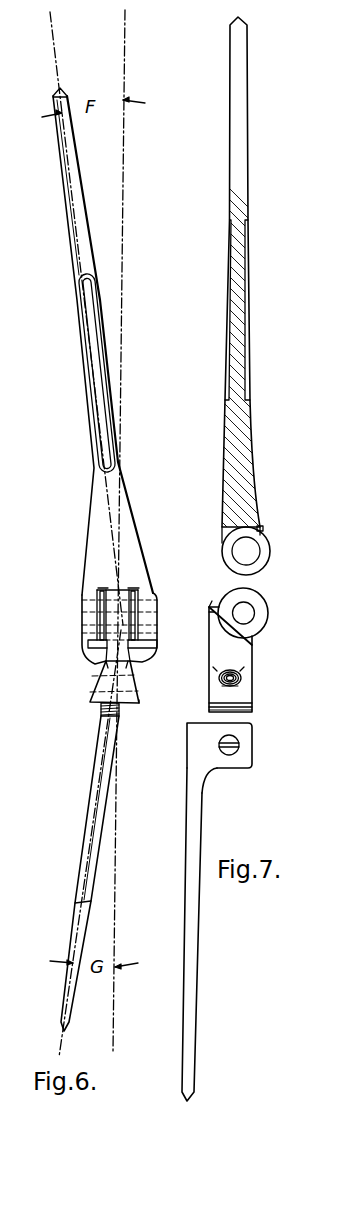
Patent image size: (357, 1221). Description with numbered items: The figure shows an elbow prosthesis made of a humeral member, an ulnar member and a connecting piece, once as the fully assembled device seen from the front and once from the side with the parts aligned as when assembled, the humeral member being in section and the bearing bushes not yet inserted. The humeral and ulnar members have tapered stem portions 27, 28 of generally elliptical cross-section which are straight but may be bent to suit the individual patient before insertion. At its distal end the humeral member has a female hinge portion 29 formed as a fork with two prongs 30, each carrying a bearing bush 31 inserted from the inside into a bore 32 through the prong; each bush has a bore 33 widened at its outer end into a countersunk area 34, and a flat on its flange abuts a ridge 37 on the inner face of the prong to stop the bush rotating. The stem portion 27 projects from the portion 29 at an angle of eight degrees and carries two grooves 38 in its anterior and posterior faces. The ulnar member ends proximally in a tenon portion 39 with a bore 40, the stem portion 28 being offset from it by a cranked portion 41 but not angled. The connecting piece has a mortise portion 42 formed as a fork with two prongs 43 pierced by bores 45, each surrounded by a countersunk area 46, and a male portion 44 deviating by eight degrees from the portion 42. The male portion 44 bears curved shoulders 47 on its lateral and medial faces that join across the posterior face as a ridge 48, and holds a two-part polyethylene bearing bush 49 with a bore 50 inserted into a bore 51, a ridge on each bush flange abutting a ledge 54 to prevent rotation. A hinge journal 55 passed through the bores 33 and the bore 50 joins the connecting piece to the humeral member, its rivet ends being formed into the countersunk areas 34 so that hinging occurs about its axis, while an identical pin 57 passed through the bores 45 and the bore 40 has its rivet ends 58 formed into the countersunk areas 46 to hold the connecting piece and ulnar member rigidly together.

In FIG. 6, the stem portion of humeral member 27 is at (77, 172).
In FIG. 7, the stem portion of humeral member 27 is at (243, 164).
In FIG. 6, the stem portion of ulnar member 28 is at (90, 876).
In FIG. 7, the stem portion of ulnar member 28 is at (195, 1017).
In FIG. 6, the female hinge portion 29 is at (150, 595).
In FIG. 6, the prongs 30 is at (95, 647).
In FIG. 7, the prongs 30 is at (231, 567).
In FIG. 6, the bearing bush 31 is at (150, 638).
In FIG. 7, the bore 32 is at (265, 557).
In FIG. 6, the bores 33 is at (82, 600).
In FIG. 6, the countersunk area 34 is at (155, 598).
In FIG. 6, the ridge 37 is at (97, 593).
In FIG. 7, the ridge 37 is at (263, 529).
In FIG. 6, the grooves 38 is at (93, 334).
In FIG. 7, the grooves 38 is at (228, 286).
In FIG. 7, the tenon portion 39 is at (248, 729).
In FIG. 7, the bore 40 is at (238, 748).
In FIG. 7, the cranked portion 41 is at (220, 766).
In FIG. 6, the mortise portion 42 is at (96, 681).
In FIG. 7, the mortise portion 42 is at (247, 658).
In FIG. 7, the prongs 43 is at (243, 710).
In FIG. 6, the male portion 44 is at (109, 702).
In FIG. 7, the male portion 44 is at (268, 617).
In FIG. 7, the bores 45 is at (226, 691).
In FIG. 7, the countersunk area 46 is at (221, 678).
In FIG. 7, the curved shoulders 47 is at (229, 633).
In FIG. 7, the ridge 48 is at (211, 607).
In FIG. 6, the bearing bush 49 is at (132, 585).
In FIG. 6, the bore 50 is at (150, 618).
In FIG. 7, the bore 51 is at (252, 604).
In FIG. 7, the ledge 54 is at (255, 640).
In FIG. 6, the hinge journal 55 is at (83, 622).
In FIG. 6, the pin 57 is at (116, 647).
In FIG. 6, the rivet ends 58 is at (138, 689).